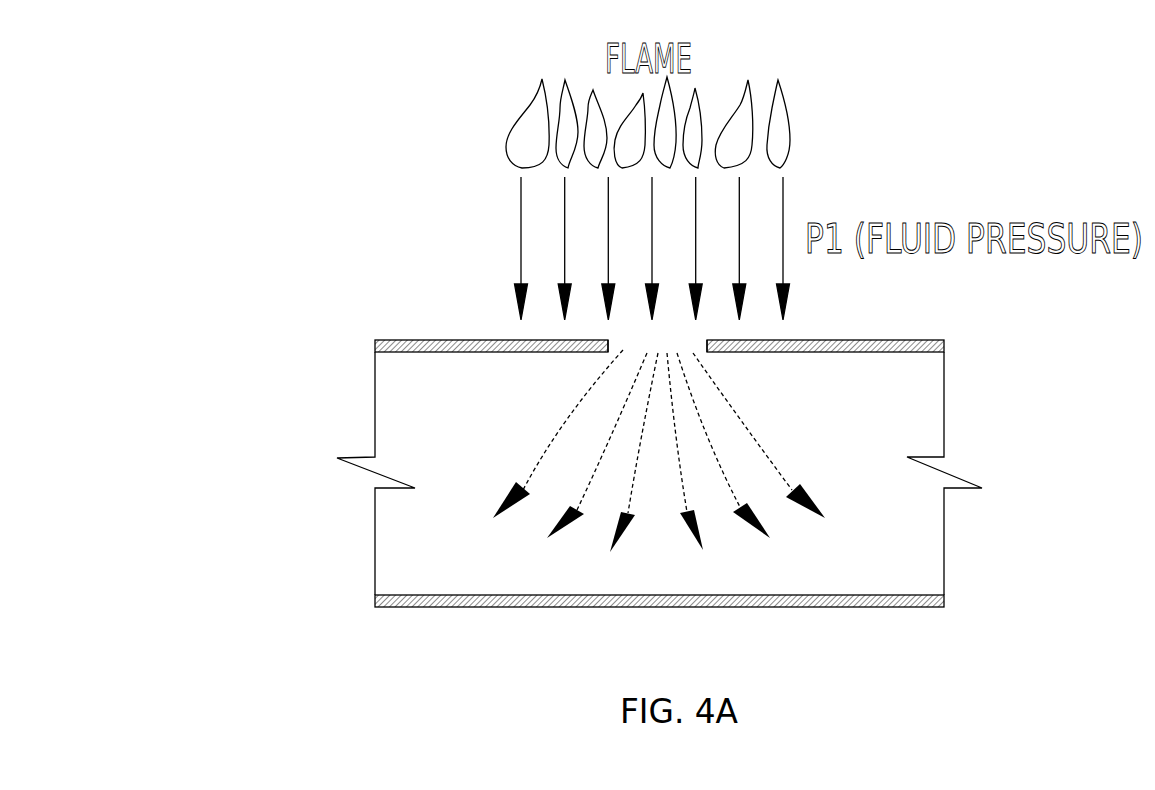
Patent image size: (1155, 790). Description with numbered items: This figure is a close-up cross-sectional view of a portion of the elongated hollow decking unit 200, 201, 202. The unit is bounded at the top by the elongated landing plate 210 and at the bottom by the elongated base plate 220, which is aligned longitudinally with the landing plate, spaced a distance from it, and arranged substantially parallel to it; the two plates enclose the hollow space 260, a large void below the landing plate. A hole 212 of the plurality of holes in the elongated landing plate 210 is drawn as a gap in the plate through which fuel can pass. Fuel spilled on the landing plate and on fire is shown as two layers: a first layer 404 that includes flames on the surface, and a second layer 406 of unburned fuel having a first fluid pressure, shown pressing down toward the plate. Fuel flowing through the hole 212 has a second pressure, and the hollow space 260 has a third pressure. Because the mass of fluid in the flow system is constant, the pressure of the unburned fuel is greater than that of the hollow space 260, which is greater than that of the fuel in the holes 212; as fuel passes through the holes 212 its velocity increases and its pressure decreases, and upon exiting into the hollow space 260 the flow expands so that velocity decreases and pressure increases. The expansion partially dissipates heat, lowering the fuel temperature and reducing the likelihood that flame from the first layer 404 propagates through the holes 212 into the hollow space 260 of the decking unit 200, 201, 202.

The elongated hollow decking unit 200 is at (620, 471).
The elongated hollow decking unit 201 is at (620, 471).
The elongated hollow decking unit 202 is at (400, 325).
The elongated landing plate 210 is at (908, 338).
The plurality of holes 212 is at (623, 350).
The elongated base plate 220 is at (918, 603).
The hollow space 260 is at (908, 393).
The first layer 404 is at (502, 163).
The second layer 406 is at (502, 264).